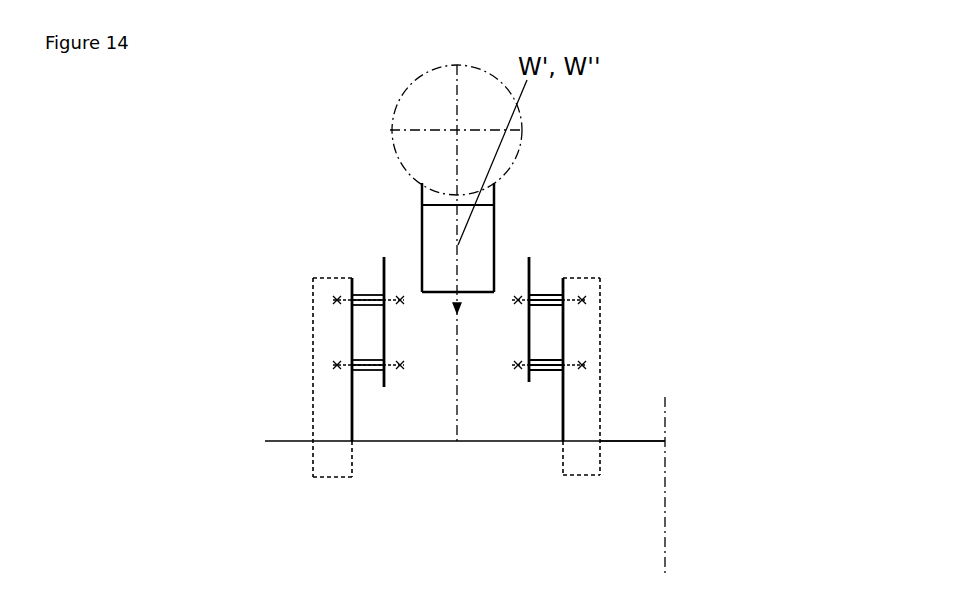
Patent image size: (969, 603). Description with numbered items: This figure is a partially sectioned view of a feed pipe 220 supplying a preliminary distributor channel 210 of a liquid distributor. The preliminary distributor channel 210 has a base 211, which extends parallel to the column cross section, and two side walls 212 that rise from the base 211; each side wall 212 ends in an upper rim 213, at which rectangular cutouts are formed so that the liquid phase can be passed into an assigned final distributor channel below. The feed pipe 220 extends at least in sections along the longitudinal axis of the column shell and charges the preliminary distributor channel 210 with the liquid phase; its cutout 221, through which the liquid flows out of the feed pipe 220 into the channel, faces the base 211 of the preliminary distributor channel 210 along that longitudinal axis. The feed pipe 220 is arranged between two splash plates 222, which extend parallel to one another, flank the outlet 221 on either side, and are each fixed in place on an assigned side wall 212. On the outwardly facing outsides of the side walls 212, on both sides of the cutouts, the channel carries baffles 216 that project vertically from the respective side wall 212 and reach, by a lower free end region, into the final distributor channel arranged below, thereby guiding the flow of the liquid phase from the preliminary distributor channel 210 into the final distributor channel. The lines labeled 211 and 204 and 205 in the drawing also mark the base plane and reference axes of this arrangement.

The axis of rotation / tool position line 204 is at (615, 498).
The reference plane line 205 is at (618, 441).
The preliminary distributor channel 210 is at (343, 325).
The base 211 is at (470, 442).
The side wall 212 is at (350, 415).
The upper rim 213 is at (350, 276).
The baffle 216 is at (323, 387).
The feed pipe 220 is at (442, 245).
The cutout 221 is at (440, 288).
The splash plate 222 is at (382, 277).